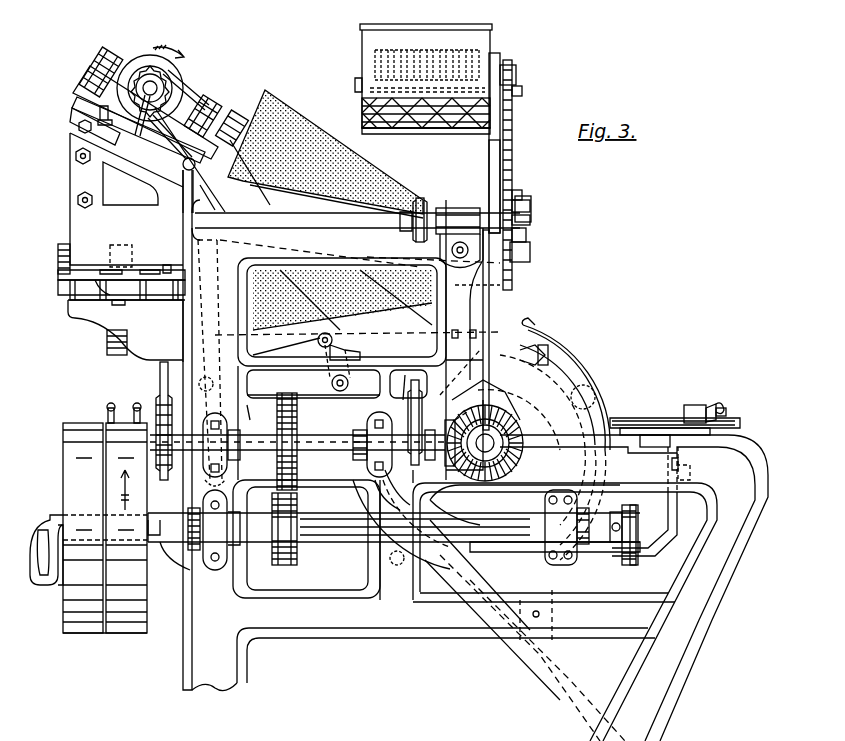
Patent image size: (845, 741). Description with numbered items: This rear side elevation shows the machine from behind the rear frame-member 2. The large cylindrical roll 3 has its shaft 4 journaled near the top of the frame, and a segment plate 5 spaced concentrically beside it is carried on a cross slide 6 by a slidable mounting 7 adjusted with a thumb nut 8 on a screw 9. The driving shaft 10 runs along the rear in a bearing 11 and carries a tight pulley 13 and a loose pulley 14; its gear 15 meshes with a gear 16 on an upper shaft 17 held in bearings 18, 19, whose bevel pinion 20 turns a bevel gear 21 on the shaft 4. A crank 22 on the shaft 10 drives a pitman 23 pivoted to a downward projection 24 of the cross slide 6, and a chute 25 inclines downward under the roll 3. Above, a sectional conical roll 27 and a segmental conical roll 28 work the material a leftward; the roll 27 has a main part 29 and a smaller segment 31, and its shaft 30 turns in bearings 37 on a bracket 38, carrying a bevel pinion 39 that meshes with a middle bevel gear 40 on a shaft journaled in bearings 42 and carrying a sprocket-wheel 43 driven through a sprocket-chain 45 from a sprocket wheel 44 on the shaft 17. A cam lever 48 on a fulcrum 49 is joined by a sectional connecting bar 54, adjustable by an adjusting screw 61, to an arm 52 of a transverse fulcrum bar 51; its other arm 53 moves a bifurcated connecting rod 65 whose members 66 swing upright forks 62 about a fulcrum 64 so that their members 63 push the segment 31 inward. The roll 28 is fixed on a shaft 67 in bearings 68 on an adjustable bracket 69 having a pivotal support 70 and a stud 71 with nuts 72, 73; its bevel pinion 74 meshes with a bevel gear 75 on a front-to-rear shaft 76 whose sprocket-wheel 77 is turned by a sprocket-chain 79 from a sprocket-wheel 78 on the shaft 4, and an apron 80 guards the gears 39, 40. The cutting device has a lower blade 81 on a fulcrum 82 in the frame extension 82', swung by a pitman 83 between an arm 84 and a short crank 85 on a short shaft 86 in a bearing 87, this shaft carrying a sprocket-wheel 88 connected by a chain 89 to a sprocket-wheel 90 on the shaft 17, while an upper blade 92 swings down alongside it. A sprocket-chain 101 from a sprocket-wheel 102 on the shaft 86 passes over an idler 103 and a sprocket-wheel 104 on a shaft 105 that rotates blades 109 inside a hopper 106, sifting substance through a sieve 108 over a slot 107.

The rear frame-member 2 is at (325, 620).
The large cylindrical roll 3 is at (568, 390).
The shaft 4 is at (492, 448).
The segment plate 5 is at (562, 362).
The cross slide 6 is at (650, 432).
The slidable mounting 7 is at (696, 410).
The thumb nut 8 is at (716, 410).
The screw 9 is at (727, 412).
The driving shaft 10 is at (340, 542).
The bearing 11 is at (215, 555).
The tight pulley 13 is at (130, 612).
The loose pulley 14 is at (88, 620).
The gear 15 is at (300, 560).
The gear 16 is at (296, 468).
The parallel shaft 17 is at (325, 442).
The bearing 18 is at (225, 462).
The bearing 19 is at (366, 462).
The bevel pinion 20 is at (447, 462).
The bevel gear 21 is at (485, 482).
The crank 22 is at (628, 560).
The pitman 23 is at (670, 512).
The downward projection 24 is at (690, 465).
The chute 25 is at (560, 665).
The sectional elongated conical roll 27 is at (343, 312).
The segmental elongated conical roll 28 is at (370, 160).
The main part 29 is at (378, 310).
The shaft 30 is at (175, 300).
The smaller segment 31 is at (272, 310).
The bearings 37 is at (90, 295).
The bracket 38 is at (105, 318).
The bevel pinion 39 is at (116, 300).
The middle bevel gear 40 is at (115, 355).
The bearings 42 is at (575, 548).
The sprocket-wheel 43 is at (167, 265).
The sprocket wheel 44 is at (165, 470).
The sprocket-chain 45 is at (158, 390).
The cam lever 48 is at (528, 566).
The fulcrum 49 is at (540, 614).
The transverse fulcrum bar 51 is at (335, 383).
The upwardly projecting arm 52 is at (355, 345).
The upwardly projecting arm 53 is at (322, 332).
The sectional connecting bar 54 is at (410, 388).
The adjusting screw 61 is at (548, 345).
The upright fork 62 is at (205, 330).
The fork members 63 is at (208, 270).
The fulcrum 64 is at (222, 482).
The bifurcated connecting rod 65 is at (313, 382).
The rod members 66 is at (253, 400).
The shaft 67 is at (238, 115).
The bearings 68 is at (108, 62).
The adjustable bracket 69 is at (84, 80).
The transverse pivotal support 70 is at (183, 165).
The stud 71 is at (100, 155).
The nut 72 is at (110, 118).
The nut 73 is at (85, 130).
The bevel pinion 74 is at (162, 39).
The bevel gear 75 is at (178, 80).
The front-to-rear shaft 76 is at (150, 95).
The sprocket-wheel 77 is at (186, 90).
The sprocket-wheel 78 is at (500, 405).
The sprocket-chain 79 is at (225, 196).
The apron 80 is at (62, 245).
The lower blade 81 is at (492, 300).
The fulcrum 82 is at (537, 249).
The frame extension 82' is at (519, 186).
The pitman 83 is at (530, 205).
The arm 84 is at (520, 236).
The short crank 85 is at (522, 222).
The short shaft 86 is at (485, 210).
The bearing 87 is at (455, 208).
The sprocket-wheel 88 is at (428, 195).
The chain 89 is at (425, 244).
The sprocket-wheel 90 is at (412, 415).
The upper blade 92 is at (495, 282).
The sprocket-chain 101 is at (512, 122).
The sprocket-wheel 102 is at (525, 200).
The idler 103 is at (520, 193).
The sprocket-wheel 104 is at (517, 80).
The left-to-right shaft 105 is at (520, 92).
The hopper 106 is at (492, 38).
The slot 107 is at (437, 128).
The sieve 108 is at (366, 114).
The blades 109 is at (376, 57).
The material a is at (596, 397).